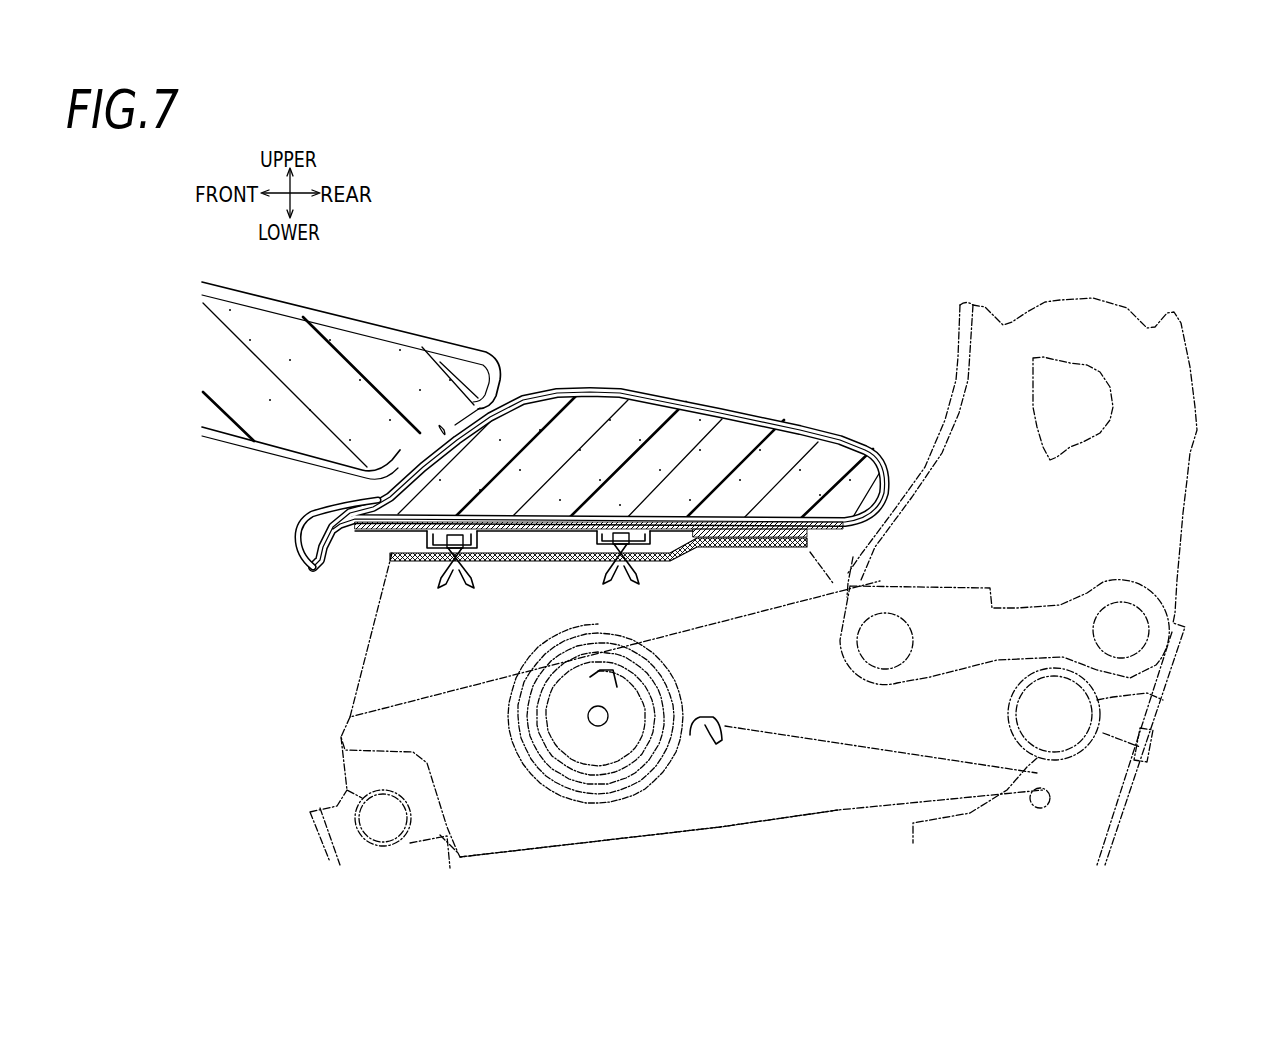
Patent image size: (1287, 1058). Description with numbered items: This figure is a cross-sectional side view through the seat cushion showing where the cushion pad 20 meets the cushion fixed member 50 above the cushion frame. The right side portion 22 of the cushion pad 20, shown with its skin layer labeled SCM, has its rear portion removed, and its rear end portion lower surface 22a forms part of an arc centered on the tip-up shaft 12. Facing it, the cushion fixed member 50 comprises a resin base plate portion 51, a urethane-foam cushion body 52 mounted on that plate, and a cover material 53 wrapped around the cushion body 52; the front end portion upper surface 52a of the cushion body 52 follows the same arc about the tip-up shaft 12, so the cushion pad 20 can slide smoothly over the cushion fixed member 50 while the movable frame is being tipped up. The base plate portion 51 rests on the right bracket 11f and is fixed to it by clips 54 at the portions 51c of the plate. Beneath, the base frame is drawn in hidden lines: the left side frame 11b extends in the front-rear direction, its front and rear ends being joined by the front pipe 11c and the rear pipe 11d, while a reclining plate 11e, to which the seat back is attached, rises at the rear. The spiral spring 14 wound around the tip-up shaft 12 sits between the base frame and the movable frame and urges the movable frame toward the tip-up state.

The cushion pad 20 is at (351, 367).
The right side portion 22 is at (347, 325).
The skin cover material SCM is at (307, 303).
The rear end portion lower surface 22a is at (447, 420).
The front end portion upper surface 52a is at (468, 413).
The cushion fixed member 50 is at (667, 400).
The cover material 53 is at (720, 413).
The cushion body 52 is at (753, 442).
The base plate portion 51 is at (528, 532).
The clip holder 51c is at (424, 542).
The clips 54 is at (466, 578).
The right bracket 11f is at (740, 548).
The reclining plate 11e is at (1195, 436).
The rear pipe 11d is at (1110, 705).
The front pipe 11c is at (343, 787).
The left side frame 11b is at (838, 812).
The spiral spring 14 is at (552, 798).
The tip-up shaft 12 is at (607, 725).